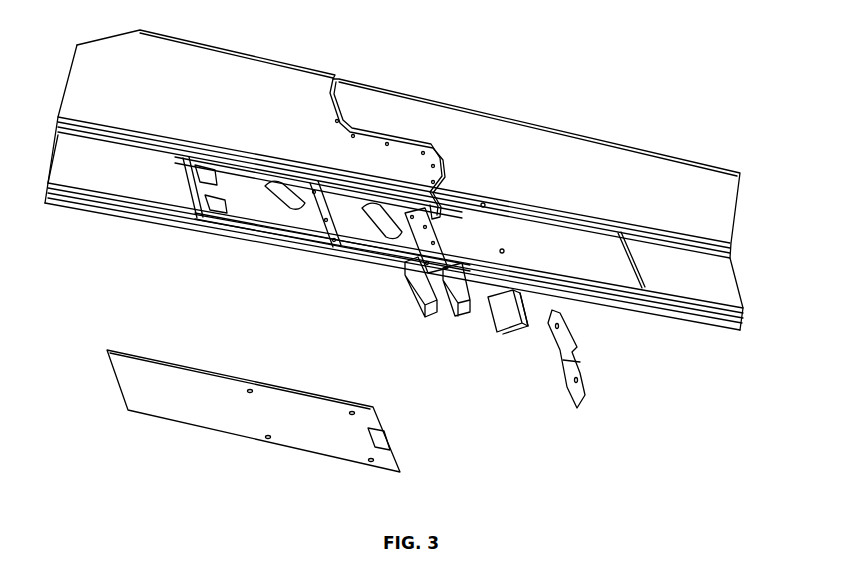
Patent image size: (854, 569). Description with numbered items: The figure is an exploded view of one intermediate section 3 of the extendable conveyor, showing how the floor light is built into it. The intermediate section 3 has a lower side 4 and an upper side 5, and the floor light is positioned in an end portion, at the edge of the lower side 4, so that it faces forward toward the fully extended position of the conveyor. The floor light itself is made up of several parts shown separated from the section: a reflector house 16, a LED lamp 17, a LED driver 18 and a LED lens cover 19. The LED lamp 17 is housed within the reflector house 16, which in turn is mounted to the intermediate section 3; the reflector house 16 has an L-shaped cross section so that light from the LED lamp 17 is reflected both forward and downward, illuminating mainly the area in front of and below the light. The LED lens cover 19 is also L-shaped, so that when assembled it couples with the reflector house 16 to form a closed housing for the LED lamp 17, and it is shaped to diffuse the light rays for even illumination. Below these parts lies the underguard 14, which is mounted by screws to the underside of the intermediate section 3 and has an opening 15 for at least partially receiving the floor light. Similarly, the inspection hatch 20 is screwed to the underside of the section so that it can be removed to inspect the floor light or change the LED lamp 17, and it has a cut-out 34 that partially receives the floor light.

The intermediate section 3 is at (247, 86).
The lower side 4 is at (75, 137).
The upper side 5 is at (355, 47).
The underguard 14 is at (150, 358).
The opening 15 is at (385, 440).
The reflector house 16 is at (422, 316).
The LED lamp 17 is at (463, 318).
The LED driver 18 is at (483, 312).
The LED lens cover 19 is at (514, 336).
The inspection hatch 20 is at (582, 400).
The cut-out 34 is at (580, 362).